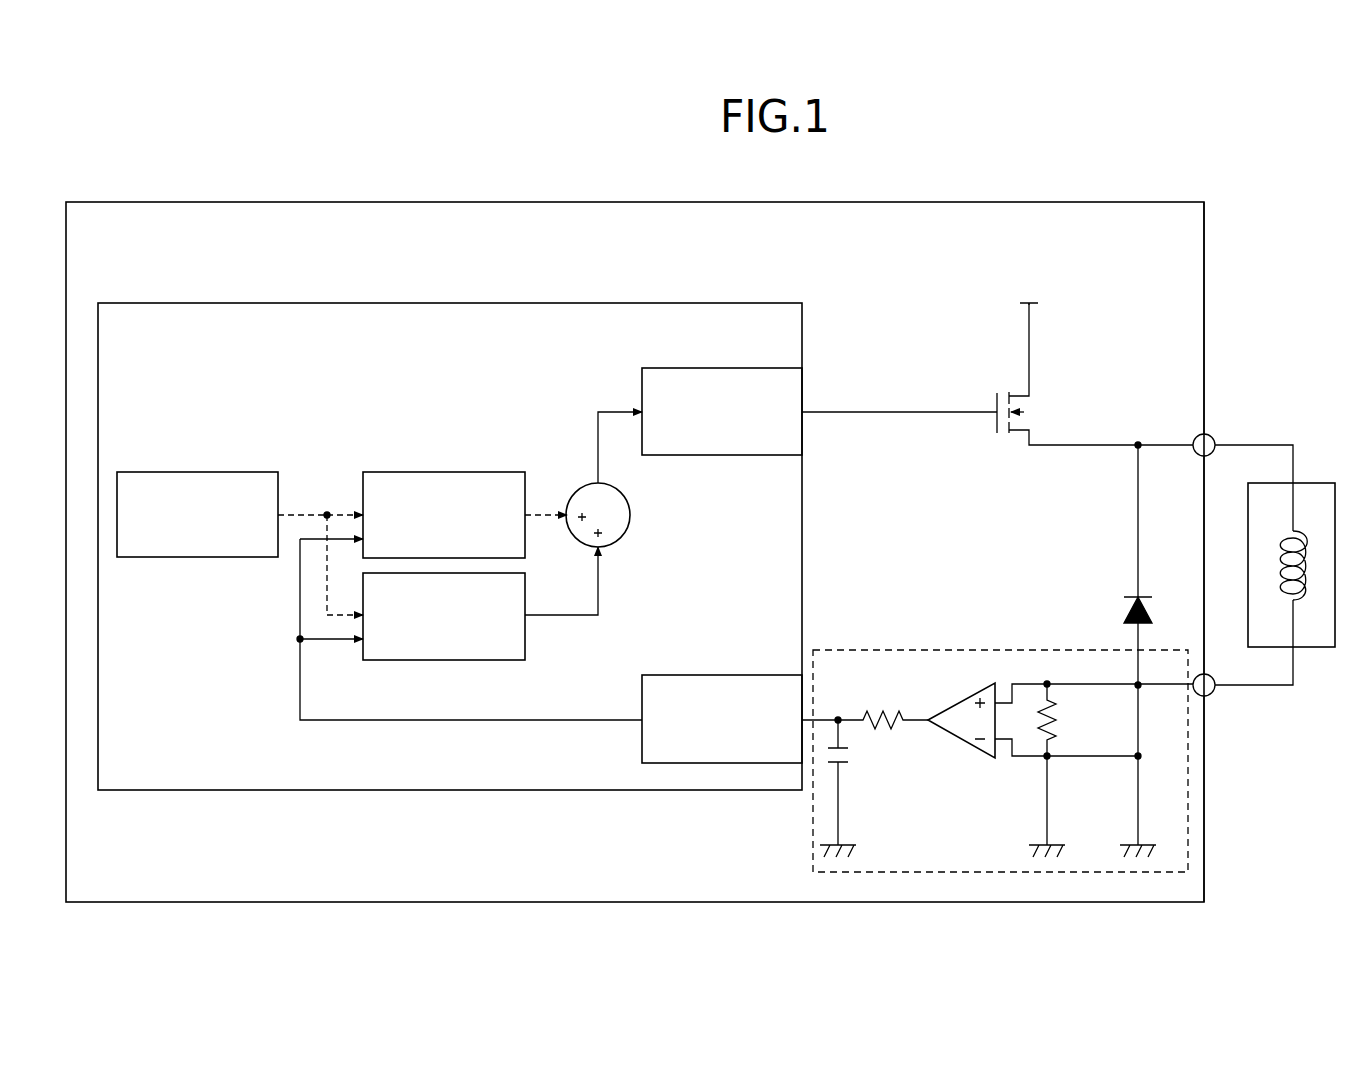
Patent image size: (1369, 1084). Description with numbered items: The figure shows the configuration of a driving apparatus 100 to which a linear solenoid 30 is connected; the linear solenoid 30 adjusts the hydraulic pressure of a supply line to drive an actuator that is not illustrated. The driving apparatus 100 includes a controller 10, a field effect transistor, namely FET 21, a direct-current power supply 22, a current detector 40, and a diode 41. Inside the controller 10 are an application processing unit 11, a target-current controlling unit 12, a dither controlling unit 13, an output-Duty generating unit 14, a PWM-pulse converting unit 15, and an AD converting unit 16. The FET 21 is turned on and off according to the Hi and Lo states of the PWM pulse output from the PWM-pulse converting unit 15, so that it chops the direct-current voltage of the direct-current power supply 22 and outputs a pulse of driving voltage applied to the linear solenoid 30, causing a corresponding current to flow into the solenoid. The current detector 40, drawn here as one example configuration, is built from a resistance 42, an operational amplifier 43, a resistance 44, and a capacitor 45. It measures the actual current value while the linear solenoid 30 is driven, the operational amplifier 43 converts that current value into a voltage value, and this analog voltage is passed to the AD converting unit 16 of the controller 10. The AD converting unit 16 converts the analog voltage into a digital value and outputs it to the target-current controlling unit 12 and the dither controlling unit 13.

The driving apparatus 100 is at (1140, 186).
The controller 10 is at (740, 287).
The application processing unit 11 is at (212, 454).
The target-current controlling unit 12 is at (460, 454).
The dither controlling unit 13 is at (460, 664).
The output-Duty generating unit 14 is at (612, 551).
The PWM-pulse converting unit 15 is at (740, 352).
The AD converting unit 16 is at (740, 659).
The FET 21 is at (1008, 447).
The direct-current power supply 22 is at (1034, 289).
The linear solenoid 30 is at (1308, 466).
The current detector 40 is at (1072, 632).
The diode 41 is at (1152, 576).
The resistance 42 is at (1058, 716).
The operational amplifier 43 is at (952, 700).
The resistance 44 is at (879, 700).
The capacitor 45 is at (846, 770).